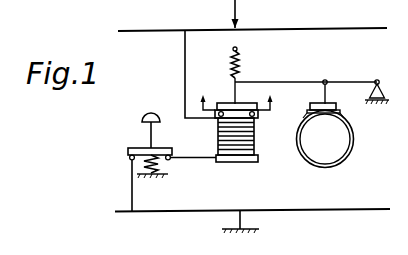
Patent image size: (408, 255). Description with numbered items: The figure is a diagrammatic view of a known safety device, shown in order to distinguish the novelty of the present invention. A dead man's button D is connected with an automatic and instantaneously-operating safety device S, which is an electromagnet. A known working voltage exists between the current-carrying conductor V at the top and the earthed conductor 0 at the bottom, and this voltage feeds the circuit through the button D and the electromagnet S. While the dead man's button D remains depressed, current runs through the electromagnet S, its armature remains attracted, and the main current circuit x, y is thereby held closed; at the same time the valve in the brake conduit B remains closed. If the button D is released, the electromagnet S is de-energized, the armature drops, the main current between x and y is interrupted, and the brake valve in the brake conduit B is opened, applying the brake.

The current-carrying conductor V is at (244, 14).
The main current circuit contact x is at (206, 93).
The main current circuit contact y is at (270, 96).
The dead man's button D is at (170, 162).
The safety device electromagnet S is at (230, 132).
The brake conduit B is at (325, 126).
The earthed conductor 0 is at (240, 221).